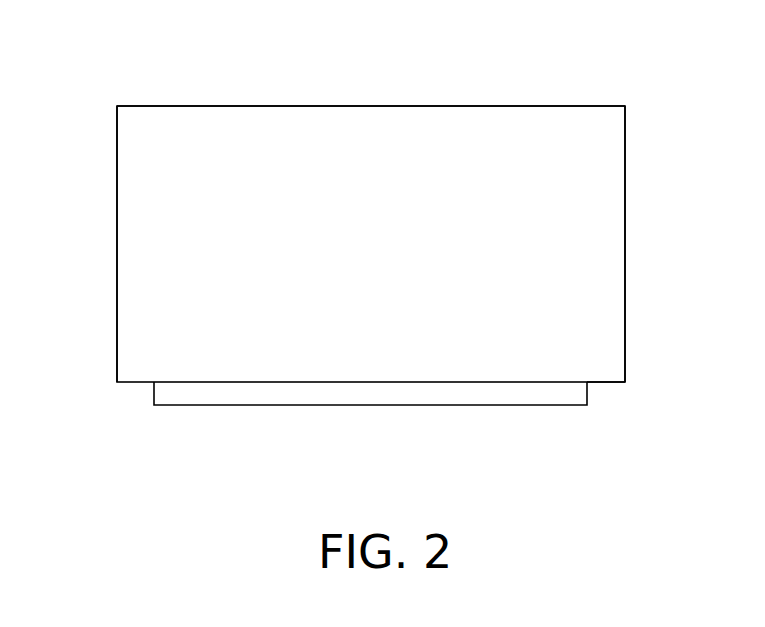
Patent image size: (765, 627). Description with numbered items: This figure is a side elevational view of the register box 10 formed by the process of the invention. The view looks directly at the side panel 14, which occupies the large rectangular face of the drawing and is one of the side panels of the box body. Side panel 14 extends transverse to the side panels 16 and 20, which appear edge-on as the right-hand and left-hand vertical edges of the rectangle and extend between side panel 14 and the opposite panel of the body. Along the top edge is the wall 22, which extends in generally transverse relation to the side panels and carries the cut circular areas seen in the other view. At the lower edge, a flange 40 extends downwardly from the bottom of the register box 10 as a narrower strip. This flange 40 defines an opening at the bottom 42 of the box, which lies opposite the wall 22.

The register box 10 is at (710, 206).
The side panel 14 is at (389, 266).
The side panel 16 is at (625, 228).
The side panel 20 is at (117, 259).
The wall 22 is at (543, 106).
The flange 40 is at (553, 405).
The bottom 42 is at (608, 382).